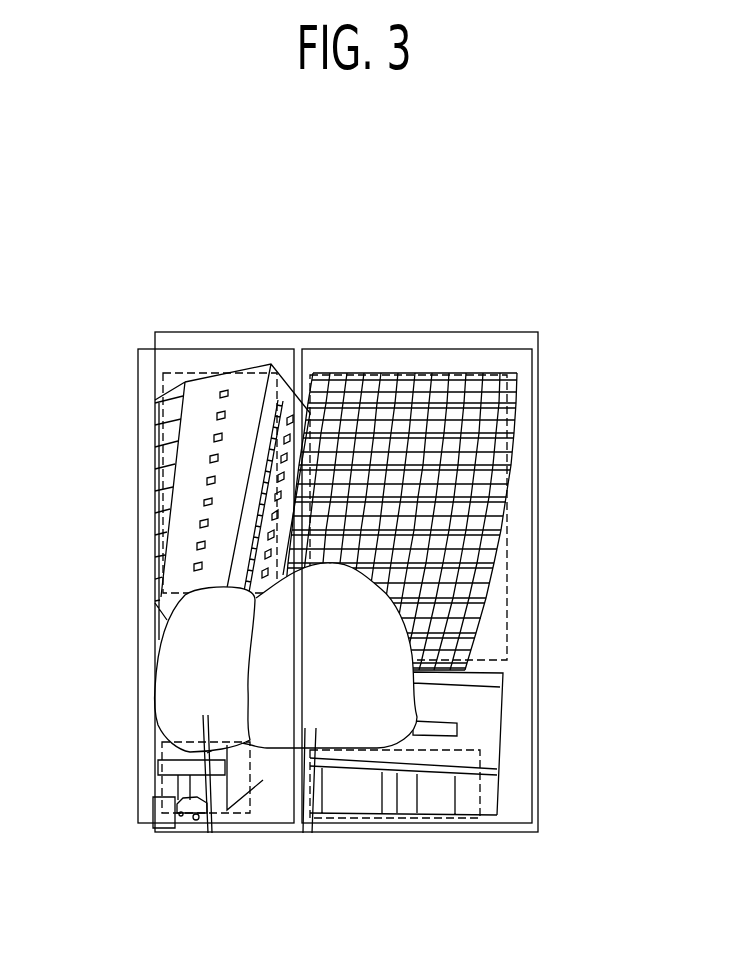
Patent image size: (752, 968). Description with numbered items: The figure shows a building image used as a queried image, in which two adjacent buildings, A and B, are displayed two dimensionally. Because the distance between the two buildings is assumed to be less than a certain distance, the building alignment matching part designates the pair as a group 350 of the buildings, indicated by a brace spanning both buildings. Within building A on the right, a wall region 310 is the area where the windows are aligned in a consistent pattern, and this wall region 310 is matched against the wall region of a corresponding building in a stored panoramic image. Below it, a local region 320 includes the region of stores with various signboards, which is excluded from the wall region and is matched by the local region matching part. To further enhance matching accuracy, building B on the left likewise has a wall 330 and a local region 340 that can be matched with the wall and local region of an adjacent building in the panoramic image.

The wall region of building A 310 is at (505, 553).
The local region of building A 320 is at (480, 790).
The wall of building B 330 is at (160, 539).
The local region of building B 340 is at (160, 784).
The group of the buildings 350 is at (432, 350).